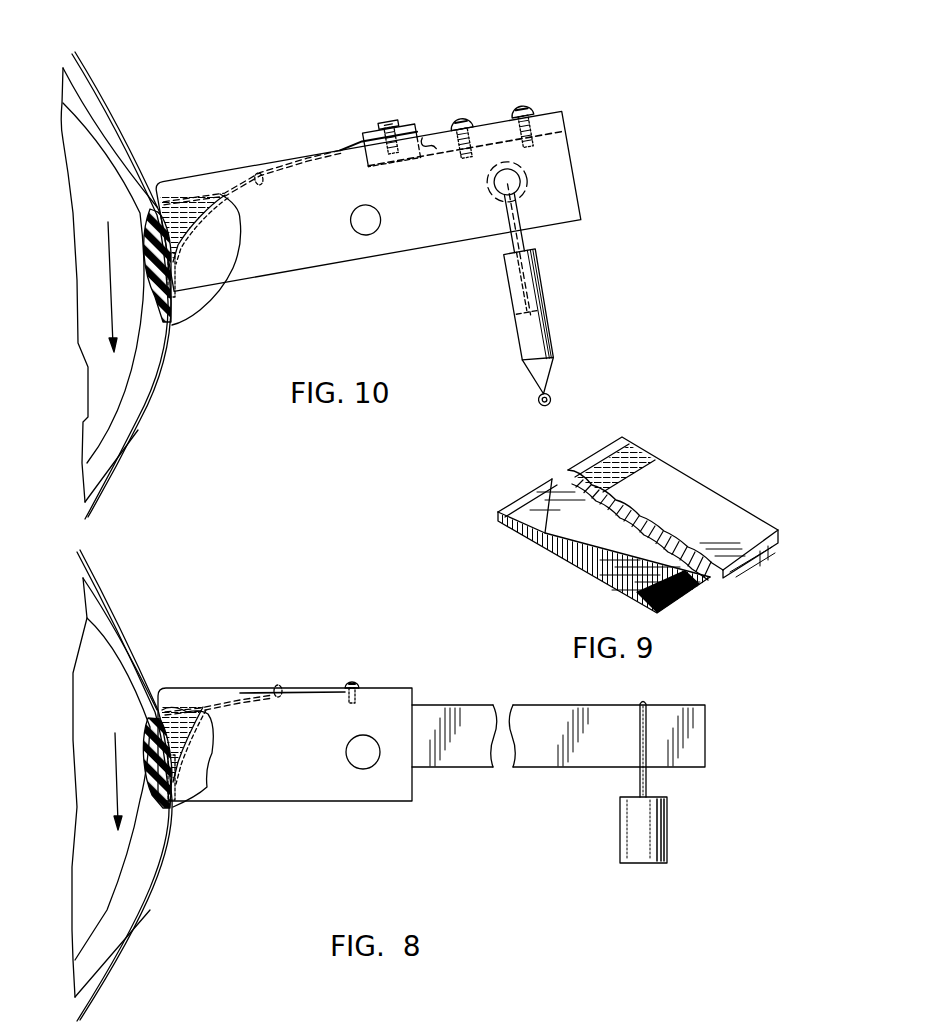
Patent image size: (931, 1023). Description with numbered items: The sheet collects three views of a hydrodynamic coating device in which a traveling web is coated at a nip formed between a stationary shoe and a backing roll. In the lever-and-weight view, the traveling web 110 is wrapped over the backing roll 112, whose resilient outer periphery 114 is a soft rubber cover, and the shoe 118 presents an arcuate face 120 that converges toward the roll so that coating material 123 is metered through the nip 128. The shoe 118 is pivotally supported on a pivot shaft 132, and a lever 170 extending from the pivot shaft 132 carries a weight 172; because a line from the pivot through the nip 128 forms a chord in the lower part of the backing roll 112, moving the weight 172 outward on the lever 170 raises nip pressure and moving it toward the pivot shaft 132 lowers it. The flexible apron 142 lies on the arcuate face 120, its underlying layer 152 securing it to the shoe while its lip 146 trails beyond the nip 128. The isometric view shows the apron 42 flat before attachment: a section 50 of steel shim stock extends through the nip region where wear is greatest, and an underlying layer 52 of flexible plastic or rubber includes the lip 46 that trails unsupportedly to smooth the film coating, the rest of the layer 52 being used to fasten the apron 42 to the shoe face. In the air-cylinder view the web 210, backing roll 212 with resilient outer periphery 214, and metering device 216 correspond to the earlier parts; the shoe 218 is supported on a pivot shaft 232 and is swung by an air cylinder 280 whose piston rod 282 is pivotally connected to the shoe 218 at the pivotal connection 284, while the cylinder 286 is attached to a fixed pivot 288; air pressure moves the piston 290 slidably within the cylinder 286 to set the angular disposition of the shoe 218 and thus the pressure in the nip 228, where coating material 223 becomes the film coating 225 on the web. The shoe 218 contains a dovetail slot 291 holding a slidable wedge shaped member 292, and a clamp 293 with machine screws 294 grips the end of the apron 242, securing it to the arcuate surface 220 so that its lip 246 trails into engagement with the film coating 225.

In FIG. 10, the traveling web 210 is at (95, 78).
In FIG. 10, the backing roll 212 is at (104, 405).
In FIG. 10, the resilient outer periphery 214 is at (143, 378).
In FIG. 10, the metering device 216 is at (585, 172).
In FIG. 10, the shoe 218 is at (318, 178).
In FIG. 10, the arcuate surface 220 is at (263, 176).
In FIG. 10, the coating material 223 is at (185, 222).
In FIG. 10, the film coating 225 is at (140, 435).
In FIG. 10, the nip 228 is at (173, 277).
In FIG. 10, the pivot shaft 232 is at (369, 228).
In FIG. 10, the apron 242 is at (213, 200).
In FIG. 10, the lip 246 is at (173, 298).
In FIG. 10, the air cylinder 280 is at (549, 320).
In FIG. 10, the piston rod 282 is at (530, 248).
In FIG. 10, the pivotal connection 284 is at (523, 178).
In FIG. 10, the cylinder 286 is at (536, 352).
In FIG. 10, the fixed pivot 288 is at (549, 398).
In FIG. 10, the piston 290 is at (530, 315).
In FIG. 10, the dovetail slot 291 is at (424, 133).
In FIG. 10, the wedge shaped member 292 is at (369, 160).
In FIG. 10, the clamp 293 is at (412, 126).
In FIG. 10, the machine screws 294 is at (393, 118).
In FIG. 9, the apron 42 is at (708, 490).
In FIG. 9, the lip 46 is at (590, 456).
In FIG. 9, the section 50 is at (634, 461).
In FIG. 9, the underlying layer 52 is at (668, 485).
In FIG. 8, the traveling web 110 is at (113, 605).
In FIG. 8, the backing roll 112 is at (103, 702).
In FIG. 8, the resilient outer periphery 114 is at (113, 637).
In FIG. 8, the shoe 118 is at (292, 768).
In FIG. 8, the arcuate face 120 is at (279, 682).
In FIG. 8, the coating material 123 is at (183, 735).
In FIG. 8, the nip 128 is at (173, 777).
In FIG. 8, the pivot shaft 132 is at (365, 756).
In FIG. 8, the apron 142 is at (193, 727).
In FIG. 8, the lip 146 is at (168, 810).
In FIG. 8, the underlying layer 152 is at (300, 687).
In FIG. 8, the lever 170 is at (457, 708).
In FIG. 8, the weight 172 is at (668, 838).